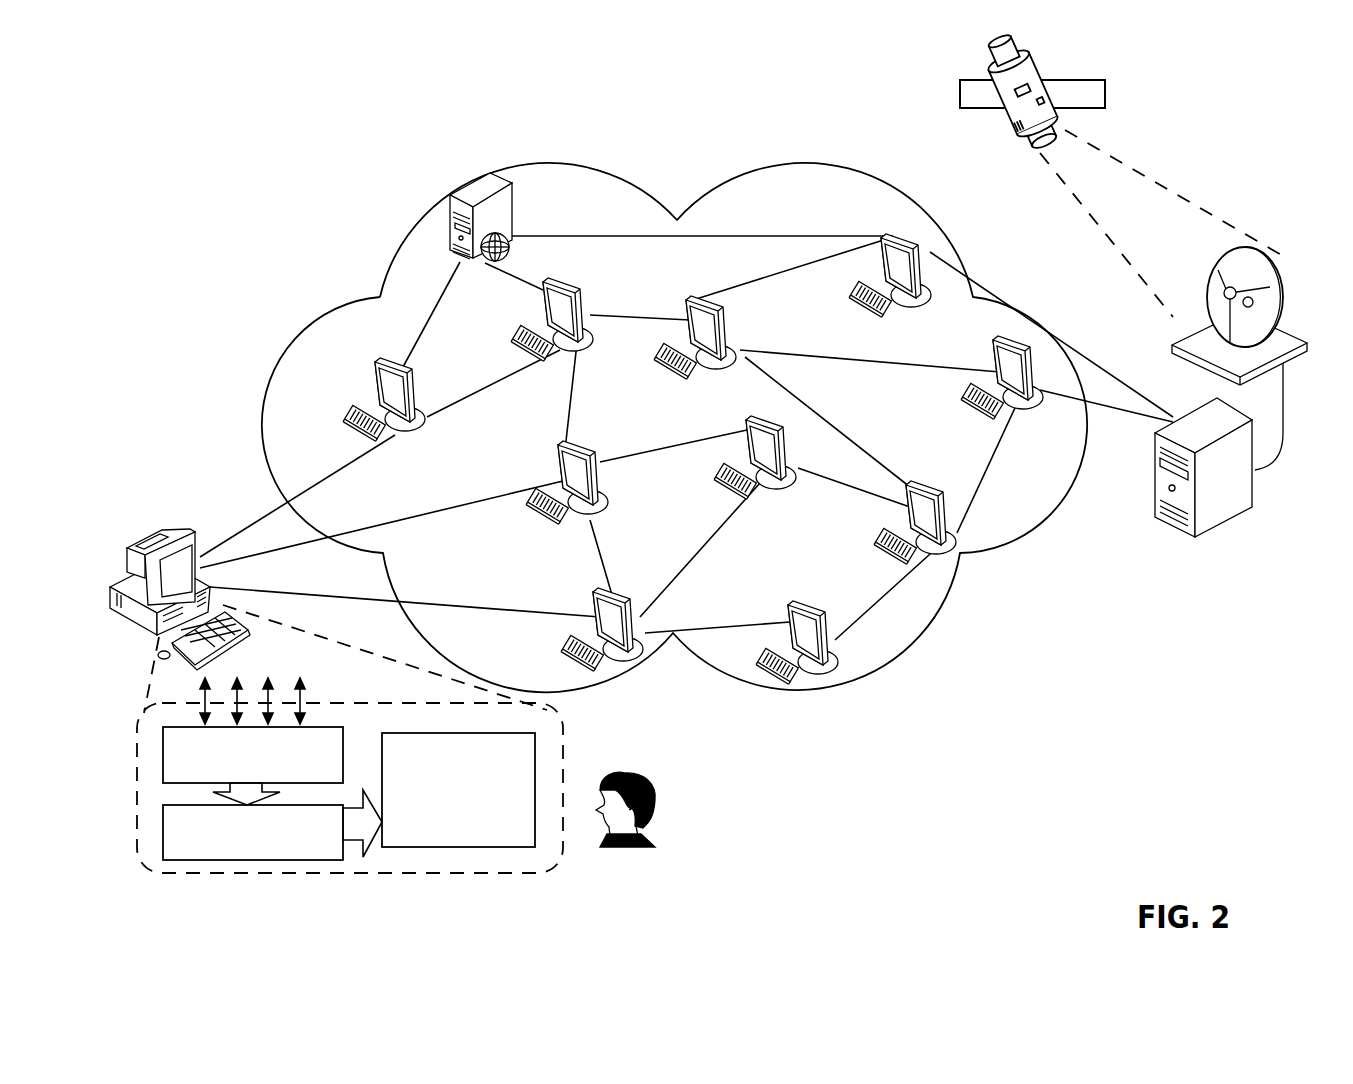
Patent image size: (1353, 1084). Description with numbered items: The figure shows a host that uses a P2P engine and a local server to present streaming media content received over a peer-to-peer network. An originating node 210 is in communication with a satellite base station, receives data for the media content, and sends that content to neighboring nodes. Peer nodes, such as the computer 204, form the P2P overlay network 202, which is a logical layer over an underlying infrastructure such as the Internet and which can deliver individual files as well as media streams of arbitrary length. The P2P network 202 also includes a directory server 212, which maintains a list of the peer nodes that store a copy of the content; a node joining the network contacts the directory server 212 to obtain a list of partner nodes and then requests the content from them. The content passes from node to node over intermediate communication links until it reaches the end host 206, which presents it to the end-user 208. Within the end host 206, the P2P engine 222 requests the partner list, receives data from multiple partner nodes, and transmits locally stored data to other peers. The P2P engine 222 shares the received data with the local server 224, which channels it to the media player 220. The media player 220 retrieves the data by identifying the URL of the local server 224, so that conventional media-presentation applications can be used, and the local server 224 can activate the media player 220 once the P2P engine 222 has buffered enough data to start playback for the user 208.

The P2P overlay network 202 is at (674, 427).
The computer 204 is at (837, 668).
The end host 206 is at (163, 528).
The end-user 208 is at (640, 850).
The originating node 210 is at (1215, 527).
The directory server 212 is at (468, 186).
The media player 220 is at (458, 790).
The P2P engine 222 is at (253, 755).
The local server 224 is at (253, 832).